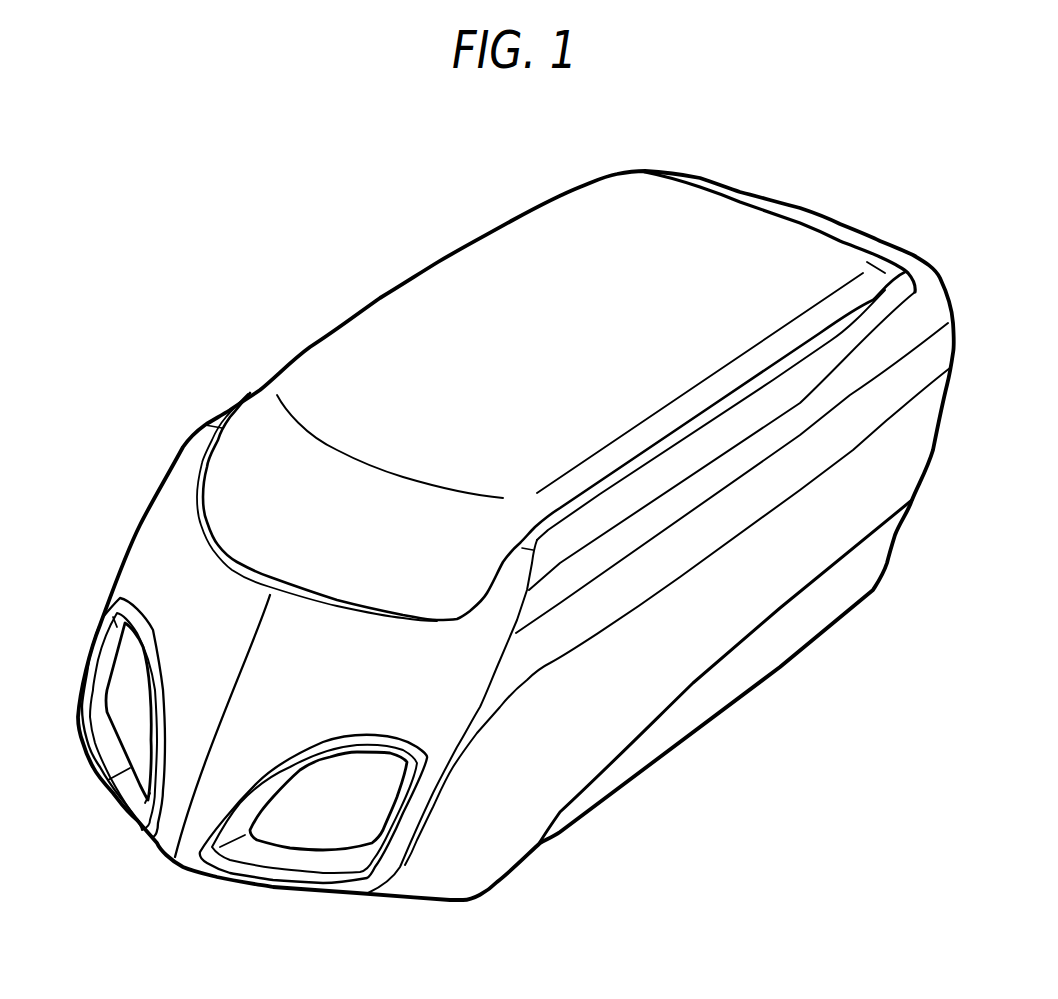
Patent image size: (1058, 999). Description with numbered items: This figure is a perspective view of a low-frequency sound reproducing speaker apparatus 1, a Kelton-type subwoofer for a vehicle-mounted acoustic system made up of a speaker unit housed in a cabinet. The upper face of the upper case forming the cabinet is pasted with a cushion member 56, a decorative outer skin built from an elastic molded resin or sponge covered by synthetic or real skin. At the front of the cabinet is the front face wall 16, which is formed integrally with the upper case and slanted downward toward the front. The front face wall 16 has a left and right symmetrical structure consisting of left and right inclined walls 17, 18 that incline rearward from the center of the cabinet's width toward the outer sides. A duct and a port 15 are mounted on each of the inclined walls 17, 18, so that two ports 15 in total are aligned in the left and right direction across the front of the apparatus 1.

The low-frequency sound reproducing speaker apparatus 1 is at (441, 263).
The cushion member 56 is at (345, 382).
The right inclined wall 18 is at (162, 553).
The port 15 is at (105, 787).
The front face wall 16 is at (453, 652).
The left inclined wall 17 is at (423, 678).